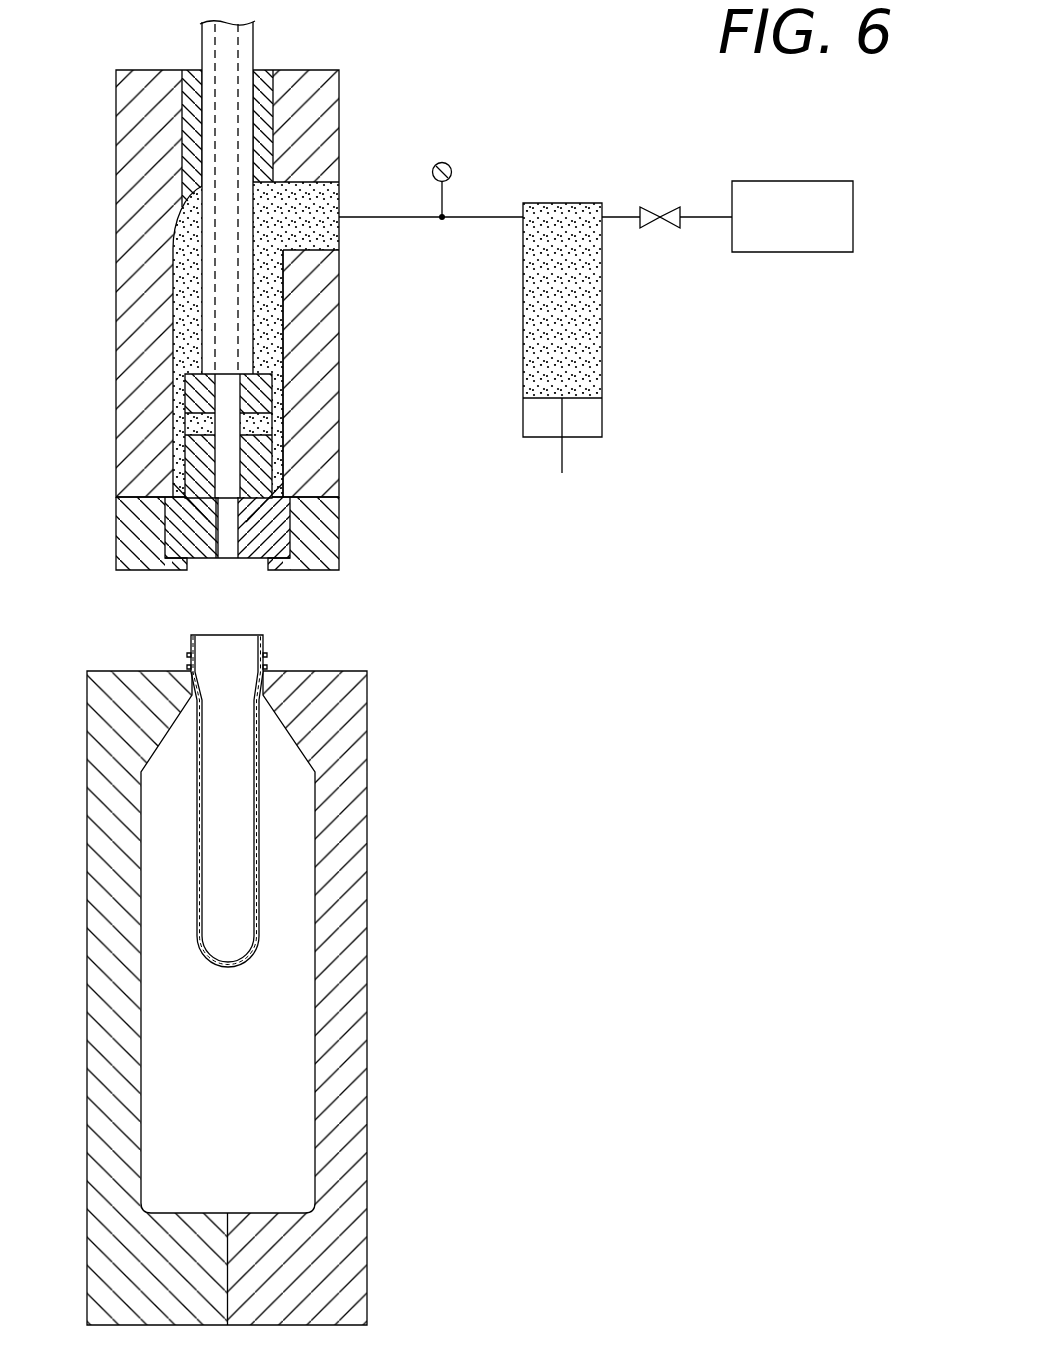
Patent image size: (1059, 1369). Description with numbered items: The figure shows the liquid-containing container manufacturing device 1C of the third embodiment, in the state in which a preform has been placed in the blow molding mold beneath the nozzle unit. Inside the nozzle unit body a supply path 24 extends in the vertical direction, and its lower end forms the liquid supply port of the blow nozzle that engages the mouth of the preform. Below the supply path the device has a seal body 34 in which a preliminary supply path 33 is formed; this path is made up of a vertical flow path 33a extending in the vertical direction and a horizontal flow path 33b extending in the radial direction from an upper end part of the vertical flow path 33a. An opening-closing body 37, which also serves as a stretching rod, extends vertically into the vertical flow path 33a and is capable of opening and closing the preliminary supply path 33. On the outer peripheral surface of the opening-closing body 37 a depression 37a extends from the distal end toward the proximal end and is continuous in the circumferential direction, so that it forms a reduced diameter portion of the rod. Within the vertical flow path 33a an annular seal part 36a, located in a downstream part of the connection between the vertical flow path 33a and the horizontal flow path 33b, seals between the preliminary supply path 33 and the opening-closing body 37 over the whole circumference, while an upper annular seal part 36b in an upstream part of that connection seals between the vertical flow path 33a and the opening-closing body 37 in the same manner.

The liquid-containing container manufacturing device 1C is at (600, 682).
The supply path 24 is at (268, 290).
The preliminary supply path 33 is at (242, 412).
The vertical flow path 33a is at (232, 470).
The horizontal flow path 33b is at (255, 431).
The seal body 34 is at (178, 452).
The annular seal part 36a is at (242, 438).
The upper annular seal part 36b is at (259, 411).
The opening-closing body 37 is at (209, 392).
The depression 37a is at (218, 523).